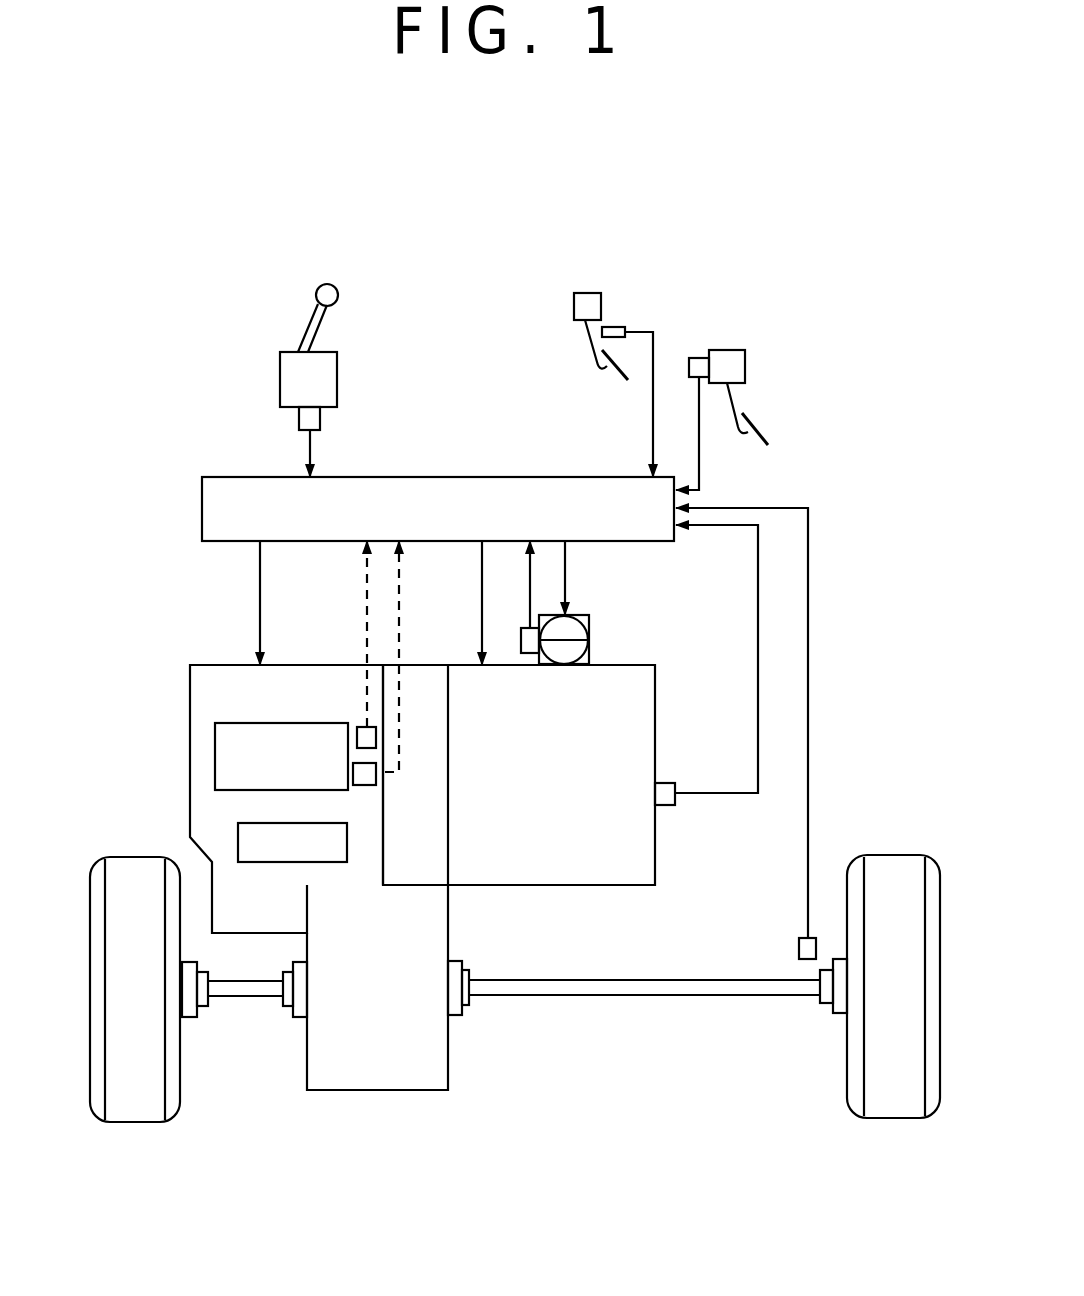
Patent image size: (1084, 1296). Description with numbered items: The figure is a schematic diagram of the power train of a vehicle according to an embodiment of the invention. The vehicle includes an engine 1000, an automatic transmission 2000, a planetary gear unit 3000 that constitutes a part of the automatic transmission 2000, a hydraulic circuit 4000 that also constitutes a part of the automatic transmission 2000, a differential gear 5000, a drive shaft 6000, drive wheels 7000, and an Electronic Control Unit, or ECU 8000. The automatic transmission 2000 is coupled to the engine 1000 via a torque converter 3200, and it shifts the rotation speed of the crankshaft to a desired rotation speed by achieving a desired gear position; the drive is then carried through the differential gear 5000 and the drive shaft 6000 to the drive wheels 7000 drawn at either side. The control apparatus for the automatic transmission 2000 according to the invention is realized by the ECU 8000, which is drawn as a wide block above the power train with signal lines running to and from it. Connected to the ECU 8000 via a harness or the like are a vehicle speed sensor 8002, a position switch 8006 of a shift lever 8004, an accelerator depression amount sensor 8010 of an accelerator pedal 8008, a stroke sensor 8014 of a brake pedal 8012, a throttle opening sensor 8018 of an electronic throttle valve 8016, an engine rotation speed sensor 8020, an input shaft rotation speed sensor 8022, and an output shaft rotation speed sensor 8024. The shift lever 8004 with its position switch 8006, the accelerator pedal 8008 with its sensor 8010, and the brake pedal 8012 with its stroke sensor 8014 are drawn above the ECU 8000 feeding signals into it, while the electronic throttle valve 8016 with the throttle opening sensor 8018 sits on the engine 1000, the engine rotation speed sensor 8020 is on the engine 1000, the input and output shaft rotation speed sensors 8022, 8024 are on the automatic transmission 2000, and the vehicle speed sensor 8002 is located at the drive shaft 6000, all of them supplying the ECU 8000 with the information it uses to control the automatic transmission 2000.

The engine 1000 is at (572, 885).
The automatic transmission 2000 is at (313, 665).
The planetary gear unit 3000 is at (215, 758).
The torque converter 3200 is at (433, 665).
The hydraulic circuit 4000 is at (288, 862).
The differential gear 5000 is at (373, 1090).
The drive shaft 6000 is at (244, 999).
The drive wheels 7000 is at (130, 1122).
The Electronic Control Unit (ECU) 8000 is at (551, 477).
The vehicle speed sensor 8002 is at (799, 950).
The shift lever 8004 is at (327, 320).
The position switch 8006 is at (299, 422).
The accelerator pedal 8008 is at (591, 350).
The accelerator depression amount sensor 8010 is at (611, 327).
The brake pedal 8012 is at (730, 400).
The stroke sensor 8014 is at (699, 358).
The electronic throttle valve 8016 is at (610, 590).
The throttle opening sensor 8018 is at (520, 642).
The engine rotation speed sensor 8020 is at (667, 805).
The input shaft rotation speed sensor 8022 is at (358, 727).
The output shaft rotation speed sensor 8024 is at (357, 785).